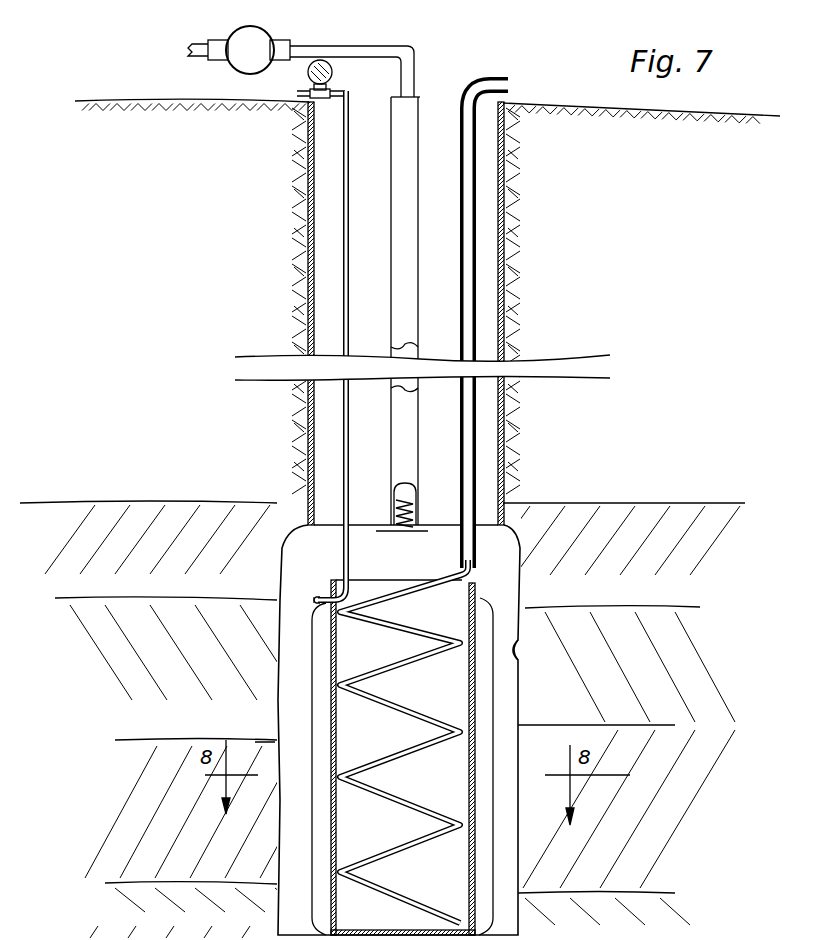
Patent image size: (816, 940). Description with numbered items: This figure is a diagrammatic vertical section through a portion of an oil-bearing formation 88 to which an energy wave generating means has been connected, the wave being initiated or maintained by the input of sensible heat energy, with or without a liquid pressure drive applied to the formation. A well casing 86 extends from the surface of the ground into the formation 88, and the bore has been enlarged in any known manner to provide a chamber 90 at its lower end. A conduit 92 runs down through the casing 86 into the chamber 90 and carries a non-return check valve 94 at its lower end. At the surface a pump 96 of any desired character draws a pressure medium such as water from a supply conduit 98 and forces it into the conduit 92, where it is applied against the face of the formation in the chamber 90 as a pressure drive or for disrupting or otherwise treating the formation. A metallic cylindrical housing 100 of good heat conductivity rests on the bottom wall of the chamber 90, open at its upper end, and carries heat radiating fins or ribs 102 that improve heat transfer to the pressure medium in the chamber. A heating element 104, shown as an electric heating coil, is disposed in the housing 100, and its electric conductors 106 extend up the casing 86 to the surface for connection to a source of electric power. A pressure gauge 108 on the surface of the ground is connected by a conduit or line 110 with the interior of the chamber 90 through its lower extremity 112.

The well casing 86 is at (504, 263).
The oil-bearing formation 88 is at (578, 512).
The chamber 90 is at (513, 661).
The conduit 92 is at (391, 169).
The non-return check valve 94 is at (398, 533).
The pump 96 is at (266, 43).
The supply conduit 98 is at (200, 48).
The metallic cylindrical housing 100 is at (325, 706).
The heat radiating fins 102 is at (500, 862).
The heating element 104 is at (372, 702).
The electric conductors 106 is at (500, 90).
The pressure gauge 108 is at (309, 77).
The conduit or line 110 is at (343, 275).
The extremity 112 is at (319, 597).